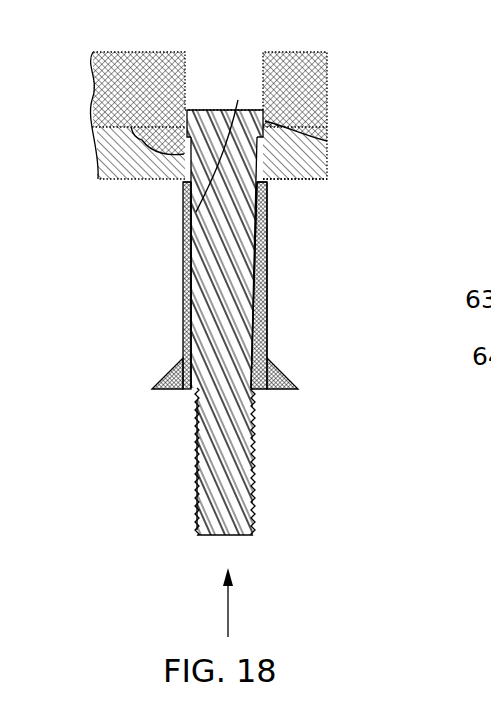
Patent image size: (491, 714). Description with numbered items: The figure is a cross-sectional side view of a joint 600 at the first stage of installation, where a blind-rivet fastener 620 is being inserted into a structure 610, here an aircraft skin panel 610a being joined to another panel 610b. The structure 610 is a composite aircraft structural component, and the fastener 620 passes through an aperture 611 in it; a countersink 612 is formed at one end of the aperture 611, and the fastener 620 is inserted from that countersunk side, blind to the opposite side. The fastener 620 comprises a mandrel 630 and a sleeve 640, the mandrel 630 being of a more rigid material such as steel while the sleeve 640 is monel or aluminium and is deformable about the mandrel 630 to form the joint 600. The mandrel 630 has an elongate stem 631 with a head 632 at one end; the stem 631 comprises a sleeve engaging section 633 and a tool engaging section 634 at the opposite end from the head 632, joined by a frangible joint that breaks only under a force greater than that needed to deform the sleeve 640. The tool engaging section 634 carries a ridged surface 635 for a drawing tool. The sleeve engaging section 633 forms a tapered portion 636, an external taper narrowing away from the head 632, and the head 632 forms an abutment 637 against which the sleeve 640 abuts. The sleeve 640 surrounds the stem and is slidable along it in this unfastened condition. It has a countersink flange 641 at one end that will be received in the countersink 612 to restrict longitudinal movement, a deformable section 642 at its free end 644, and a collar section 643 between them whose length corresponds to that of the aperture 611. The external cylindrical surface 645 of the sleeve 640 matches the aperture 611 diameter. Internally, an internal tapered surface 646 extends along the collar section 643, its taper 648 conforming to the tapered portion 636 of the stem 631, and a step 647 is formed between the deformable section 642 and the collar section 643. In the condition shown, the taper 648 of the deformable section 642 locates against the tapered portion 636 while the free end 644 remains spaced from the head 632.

The joint 600 is at (378, 102).
The structure 610 is at (214, 109).
The aircraft skin panel 610a is at (125, 158).
The panel 610b is at (128, 78).
The aperture 611 is at (208, 70).
The countersink 612 is at (282, 175).
The fastener 620 is at (228, 310).
The mandrel 630 is at (226, 274).
The elongate stem 631 is at (233, 348).
The head 632 is at (327, 141).
The sleeve engaging section 633 is at (238, 328).
The tool engaging section 634 is at (238, 453).
The ridged surface 635 is at (197, 467).
The tapered portion 636 is at (190, 172).
The abutment 637 is at (131, 127).
The sleeve 640 is at (228, 310).
The countersink flange 641 is at (268, 390).
The deformable section 642 is at (187, 223).
The collar section 643 is at (262, 283).
The free end 644 is at (264, 179).
The external cylindrical surface 645 is at (183, 273).
The internal tapered surface 646 is at (115, 303).
The step 647 is at (258, 258).
The taper 648 is at (238, 100).